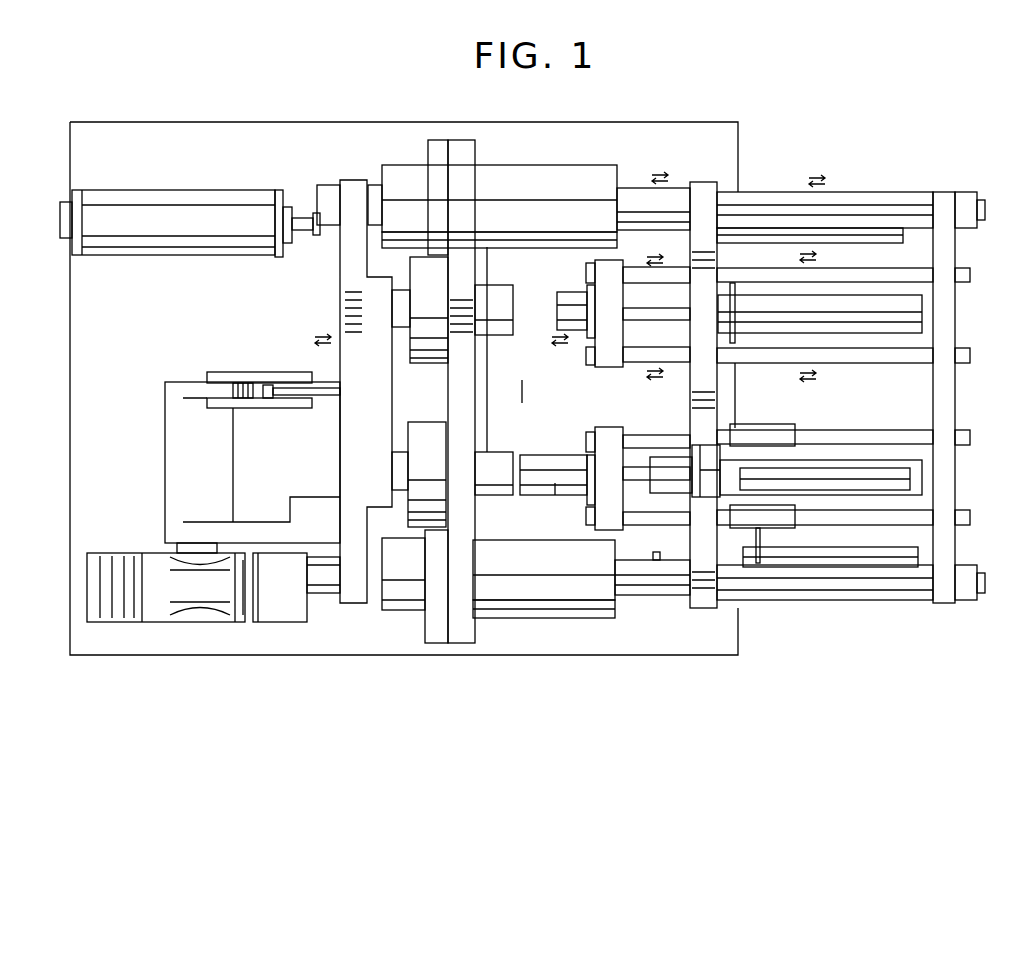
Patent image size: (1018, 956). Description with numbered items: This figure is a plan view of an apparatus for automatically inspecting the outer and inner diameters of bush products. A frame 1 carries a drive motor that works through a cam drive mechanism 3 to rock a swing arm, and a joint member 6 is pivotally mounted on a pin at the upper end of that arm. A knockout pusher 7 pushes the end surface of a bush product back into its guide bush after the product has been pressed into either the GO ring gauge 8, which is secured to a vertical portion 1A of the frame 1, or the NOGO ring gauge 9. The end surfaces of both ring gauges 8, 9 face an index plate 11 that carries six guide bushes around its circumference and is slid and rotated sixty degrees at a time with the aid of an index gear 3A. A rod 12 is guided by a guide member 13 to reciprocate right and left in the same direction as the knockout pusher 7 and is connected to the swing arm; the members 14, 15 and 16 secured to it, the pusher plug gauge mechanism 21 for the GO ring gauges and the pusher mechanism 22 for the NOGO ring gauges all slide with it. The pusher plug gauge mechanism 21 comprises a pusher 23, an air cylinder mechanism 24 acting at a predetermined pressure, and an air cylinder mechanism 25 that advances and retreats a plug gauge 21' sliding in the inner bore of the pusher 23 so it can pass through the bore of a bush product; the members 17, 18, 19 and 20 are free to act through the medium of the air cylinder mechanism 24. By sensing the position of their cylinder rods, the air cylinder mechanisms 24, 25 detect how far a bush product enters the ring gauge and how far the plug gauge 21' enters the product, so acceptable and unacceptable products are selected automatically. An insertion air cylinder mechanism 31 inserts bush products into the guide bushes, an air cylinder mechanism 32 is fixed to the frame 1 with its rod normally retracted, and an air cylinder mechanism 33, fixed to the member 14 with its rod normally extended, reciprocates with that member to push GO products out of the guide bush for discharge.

The frame 1 is at (134, 640).
The vertical portion of the frame 1A is at (458, 637).
The cam drive mechanism 3 is at (310, 515).
The index gear 3A is at (400, 390).
The joint member 6 is at (340, 452).
The knockout pusher 7 is at (400, 320).
The GO ring gauge 8 is at (418, 520).
The NOGO ring gauge 9 is at (405, 290).
The index plate 11 is at (488, 395).
The rod 12 is at (637, 190).
The guide member 13 is at (556, 178).
The member 14 is at (704, 186).
The member 15 is at (948, 246).
The member 16 is at (766, 195).
The member 17 is at (898, 278).
The member 18 is at (887, 356).
The member 19 is at (836, 434).
The member 20 is at (850, 528).
The pusher plug gauge mechanism 21 is at (553, 518).
The plug gauge 21' is at (616, 481).
The pusher mechanism 22 is at (571, 284).
The pusher 23 is at (527, 493).
The air cylinder mechanism 24 is at (918, 317).
The air cylinder mechanism for the plug gauges 25 is at (920, 482).
The insertion air cylinder mechanism 31 is at (918, 556).
The air cylinder mechanism 32 is at (157, 205).
The air cylinder mechanism 33 is at (872, 236).